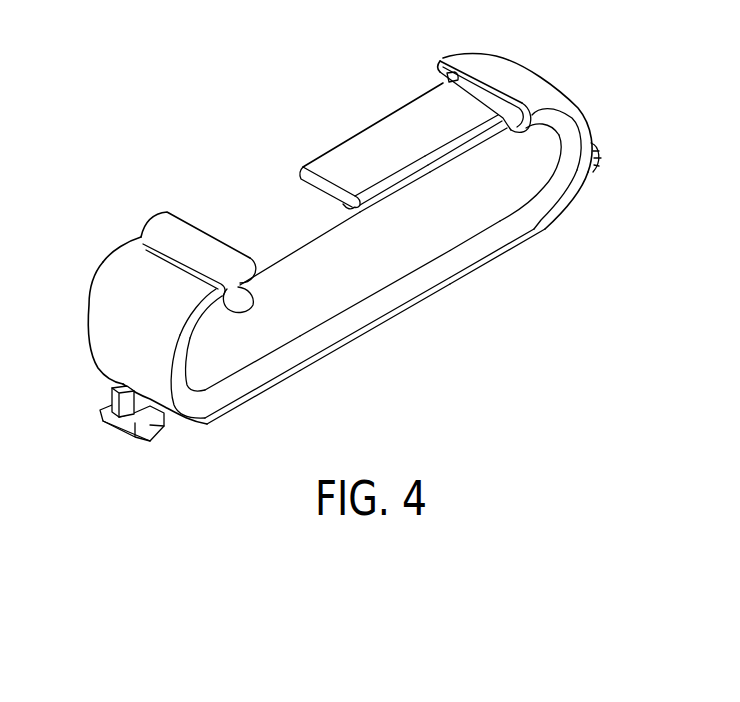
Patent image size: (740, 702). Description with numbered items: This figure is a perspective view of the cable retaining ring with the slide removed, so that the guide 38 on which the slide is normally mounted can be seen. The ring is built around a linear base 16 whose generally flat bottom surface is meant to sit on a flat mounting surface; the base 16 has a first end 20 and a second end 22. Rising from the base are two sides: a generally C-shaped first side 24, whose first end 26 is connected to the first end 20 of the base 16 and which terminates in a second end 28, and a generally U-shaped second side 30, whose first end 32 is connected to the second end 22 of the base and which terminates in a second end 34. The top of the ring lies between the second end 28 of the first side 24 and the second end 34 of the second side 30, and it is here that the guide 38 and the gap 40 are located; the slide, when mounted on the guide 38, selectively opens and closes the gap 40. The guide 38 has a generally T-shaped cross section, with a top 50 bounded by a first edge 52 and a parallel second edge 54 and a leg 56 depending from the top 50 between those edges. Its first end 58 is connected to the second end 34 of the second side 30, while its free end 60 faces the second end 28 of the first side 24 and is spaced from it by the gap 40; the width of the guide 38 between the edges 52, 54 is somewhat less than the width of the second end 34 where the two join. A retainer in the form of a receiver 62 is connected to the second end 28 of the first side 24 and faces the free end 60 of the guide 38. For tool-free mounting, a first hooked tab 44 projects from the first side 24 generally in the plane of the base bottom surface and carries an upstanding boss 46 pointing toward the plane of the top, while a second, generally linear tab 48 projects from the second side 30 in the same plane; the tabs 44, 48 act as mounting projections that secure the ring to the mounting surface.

The base 16 is at (372, 281).
The first end of the base 20 is at (225, 367).
The second end of the base 22 is at (508, 193).
The first side 24 is at (103, 344).
The first end of the first side 26 is at (200, 411).
The second end of the first side 28 is at (128, 256).
The second side 30 is at (570, 136).
The first end of the second side 32 is at (555, 188).
The second end of the second side 34 is at (467, 62).
The guide 38 is at (386, 84).
The gap 40 is at (238, 216).
The first hooked tab 44 is at (116, 427).
The upstanding boss 46 is at (112, 391).
The second tab 48 is at (595, 158).
The top of the guide 50 is at (373, 140).
The first edge 52 is at (340, 140).
The second edge 54 is at (377, 187).
The leg 56 is at (338, 205).
The first end of the guide 58 is at (440, 100).
The free end of the guide 60 is at (317, 193).
The receiver 62 is at (173, 229).